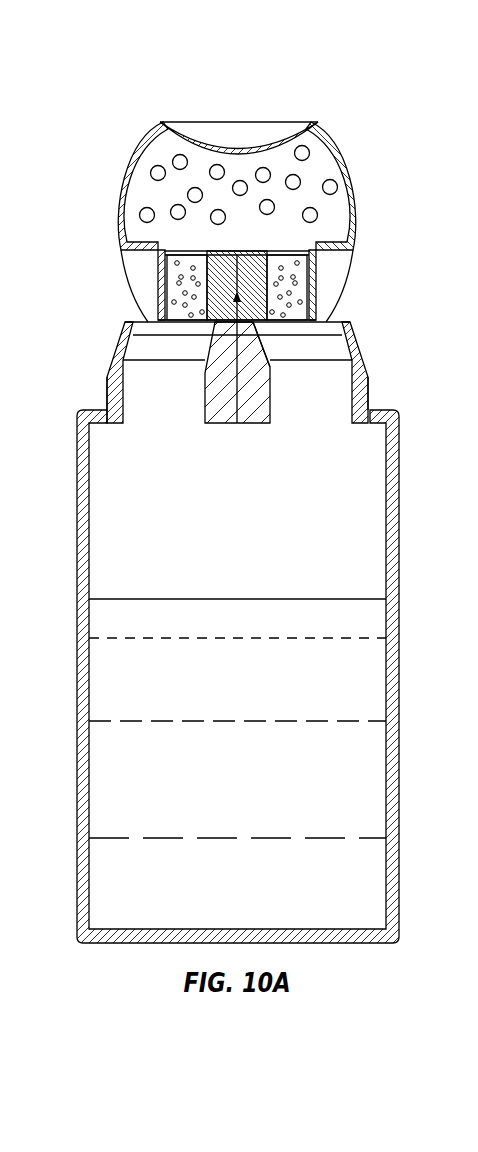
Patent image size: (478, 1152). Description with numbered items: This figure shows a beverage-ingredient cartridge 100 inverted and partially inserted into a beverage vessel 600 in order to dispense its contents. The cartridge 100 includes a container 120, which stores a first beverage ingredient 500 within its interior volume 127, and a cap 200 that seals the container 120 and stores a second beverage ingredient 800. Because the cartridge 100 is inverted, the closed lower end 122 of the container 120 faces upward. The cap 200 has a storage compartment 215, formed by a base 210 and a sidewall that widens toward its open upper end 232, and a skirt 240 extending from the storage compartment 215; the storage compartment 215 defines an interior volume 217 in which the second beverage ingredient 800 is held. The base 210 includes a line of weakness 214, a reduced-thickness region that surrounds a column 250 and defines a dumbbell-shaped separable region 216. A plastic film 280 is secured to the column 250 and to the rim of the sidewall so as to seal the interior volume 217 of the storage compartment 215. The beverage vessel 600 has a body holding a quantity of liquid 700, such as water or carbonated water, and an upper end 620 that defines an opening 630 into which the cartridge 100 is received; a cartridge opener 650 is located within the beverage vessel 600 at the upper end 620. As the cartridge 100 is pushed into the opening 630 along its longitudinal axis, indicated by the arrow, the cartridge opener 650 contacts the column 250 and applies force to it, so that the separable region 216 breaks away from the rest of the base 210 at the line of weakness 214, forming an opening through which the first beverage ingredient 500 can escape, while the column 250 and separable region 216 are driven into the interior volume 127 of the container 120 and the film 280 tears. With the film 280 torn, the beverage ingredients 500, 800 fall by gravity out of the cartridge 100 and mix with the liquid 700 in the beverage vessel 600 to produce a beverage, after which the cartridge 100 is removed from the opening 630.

The beverage-ingredient cartridge 100 is at (86, 102).
The container 120 is at (122, 186).
The closed lower end of container 122 is at (197, 121).
The interior volume of container 127 is at (149, 139).
The first beverage ingredient 500 is at (305, 150).
The line of weakness 214 is at (234, 250).
The separable region 216 is at (263, 252).
The cap 200 is at (110, 270).
The base 210 is at (290, 253).
The storage compartment 215 is at (300, 260).
The second beverage ingredient 800 is at (300, 288).
The interior volume of storage compartment 217 is at (160, 296).
The skirt 240 is at (333, 290).
The column 250 is at (235, 292).
The upper end of beverage vessel 620 is at (358, 356).
The opening of beverage vessel 630 is at (330, 405).
The plastic film 280 is at (170, 322).
The upper end of sidewall 232 is at (298, 321).
The cartridge opener 650 is at (238, 423).
The beverage vessel 600 is at (52, 598).
The liquid 700 is at (372, 776).